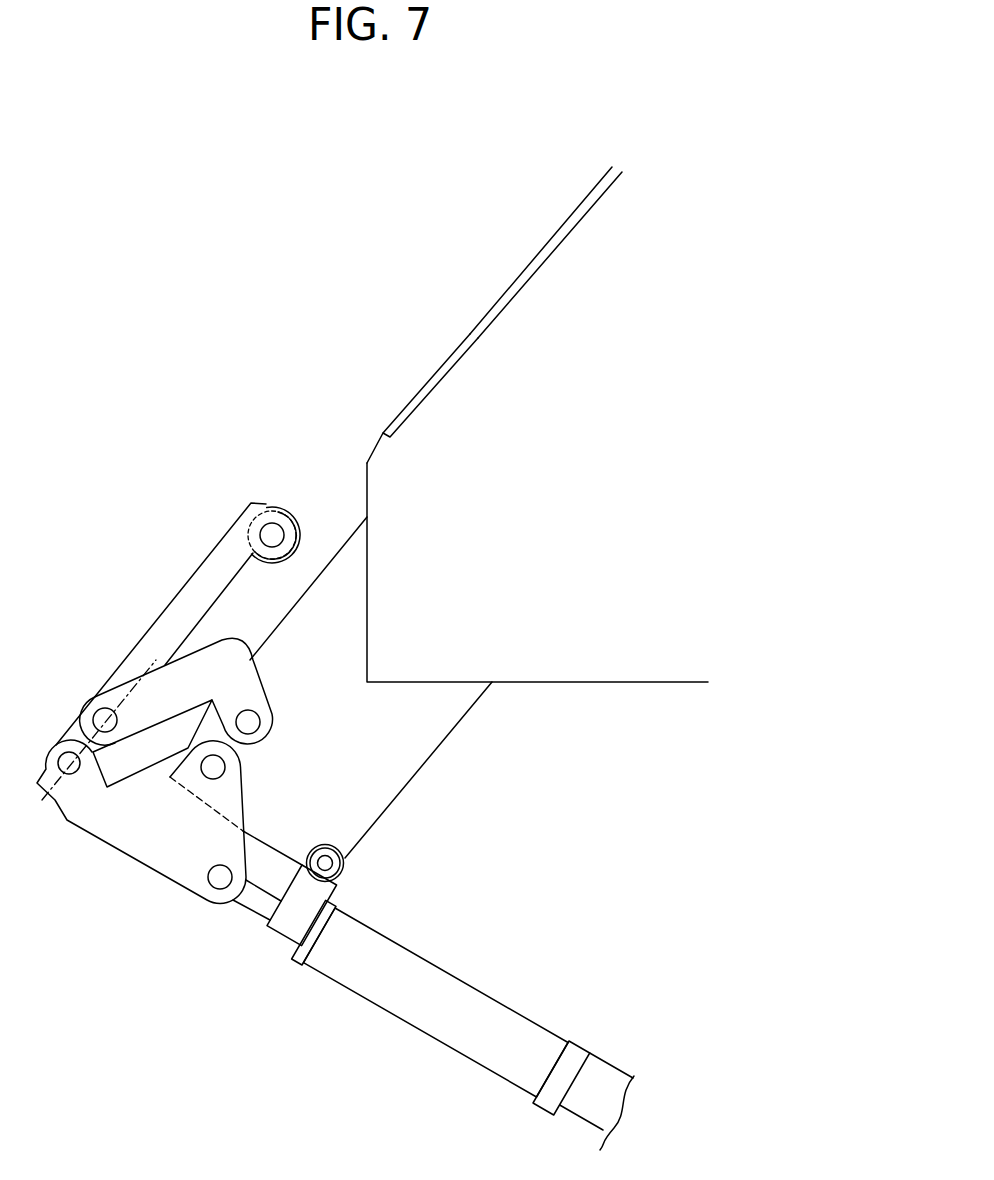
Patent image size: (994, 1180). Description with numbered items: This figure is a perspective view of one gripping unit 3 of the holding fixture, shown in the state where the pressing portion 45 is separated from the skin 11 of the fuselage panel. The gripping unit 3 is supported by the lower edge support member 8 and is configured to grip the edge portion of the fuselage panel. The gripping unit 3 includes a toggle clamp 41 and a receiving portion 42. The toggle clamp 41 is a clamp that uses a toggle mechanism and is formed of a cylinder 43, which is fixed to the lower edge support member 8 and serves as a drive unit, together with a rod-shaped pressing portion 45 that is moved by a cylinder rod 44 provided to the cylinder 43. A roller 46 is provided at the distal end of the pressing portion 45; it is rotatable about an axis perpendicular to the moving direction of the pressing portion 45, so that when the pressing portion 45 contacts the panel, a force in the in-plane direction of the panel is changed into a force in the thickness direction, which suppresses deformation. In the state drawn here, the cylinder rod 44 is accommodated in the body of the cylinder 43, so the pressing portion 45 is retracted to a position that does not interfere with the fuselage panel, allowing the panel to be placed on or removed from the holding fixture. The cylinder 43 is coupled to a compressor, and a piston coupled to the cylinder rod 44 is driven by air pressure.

The gripping unit 3 is at (423, 197).
The lower edge support member 8 is at (398, 767).
The skin 11 is at (517, 286).
The toggle clamp 41 is at (132, 533).
The receiving portion 42 is at (465, 385).
The cylinder 43 is at (445, 1023).
The cylinder rod 44 is at (259, 898).
The pressing portion 45 is at (163, 636).
The roller 46 is at (281, 508).